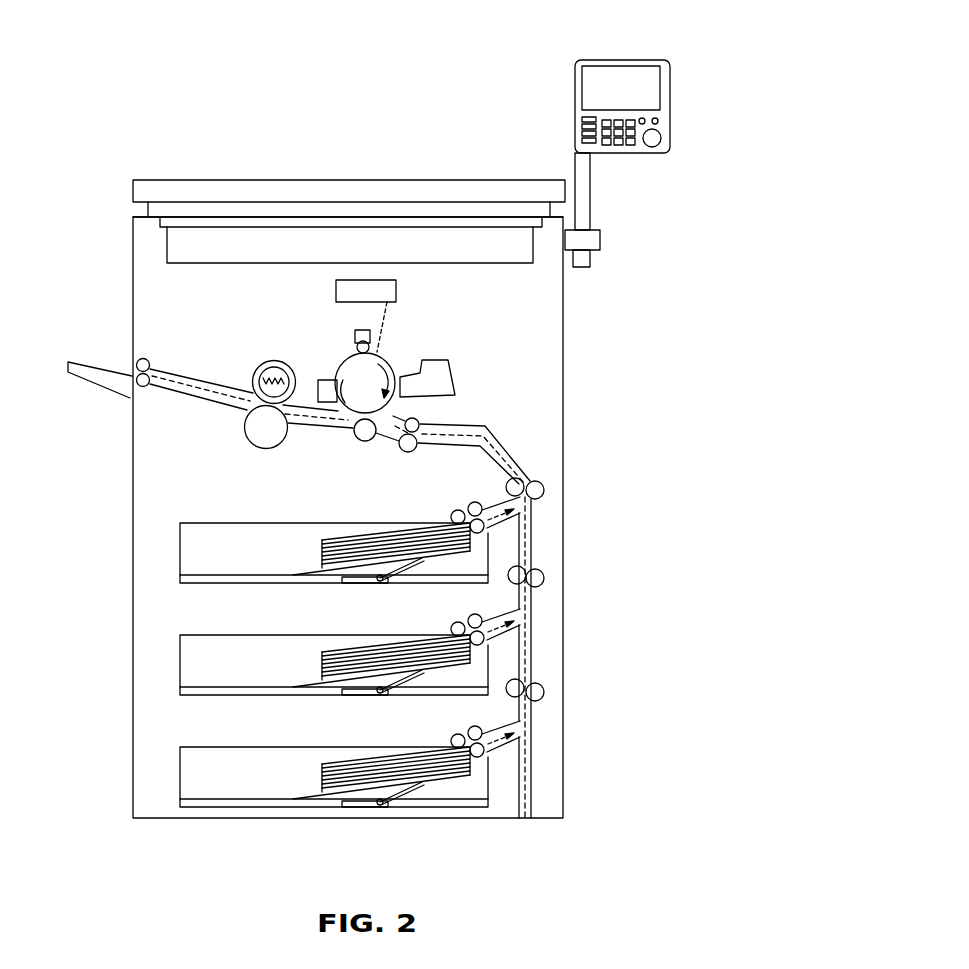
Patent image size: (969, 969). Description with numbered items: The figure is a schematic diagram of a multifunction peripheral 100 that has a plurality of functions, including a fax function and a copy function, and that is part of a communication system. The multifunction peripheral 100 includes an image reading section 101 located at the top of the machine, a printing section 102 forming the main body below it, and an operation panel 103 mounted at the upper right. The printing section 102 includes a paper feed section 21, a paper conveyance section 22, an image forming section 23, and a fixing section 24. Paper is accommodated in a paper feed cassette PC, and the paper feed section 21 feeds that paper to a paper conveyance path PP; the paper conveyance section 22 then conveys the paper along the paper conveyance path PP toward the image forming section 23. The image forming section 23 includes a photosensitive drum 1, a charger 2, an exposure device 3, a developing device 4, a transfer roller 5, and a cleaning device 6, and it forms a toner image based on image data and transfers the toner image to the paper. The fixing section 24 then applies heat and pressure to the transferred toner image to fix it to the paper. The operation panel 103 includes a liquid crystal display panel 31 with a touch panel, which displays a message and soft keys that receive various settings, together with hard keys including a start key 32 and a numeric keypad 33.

The multifunction peripheral 100 is at (133, 169).
The image reading section 101 is at (544, 265).
The printing section 102 is at (542, 382).
The operation panel 103 is at (572, 53).
The liquid crystal display panel 31 is at (612, 75).
The start key 32 is at (652, 148).
The numeric keypad 33 is at (617, 147).
The photosensitive drum 1 is at (352, 368).
The charger 2 is at (358, 333).
The exposure device 3 is at (340, 292).
The developing device 4 is at (450, 365).
The transfer roller 5 is at (360, 436).
The cleaning device 6 is at (320, 385).
The paper feed section 21 is at (442, 511).
The paper conveyance section 22 is at (154, 349).
The image forming section 23 is at (407, 331).
The fixing section 24 is at (223, 428).
The paper feed cassette PC is at (203, 523).
The paper conveyance path PP is at (505, 445).